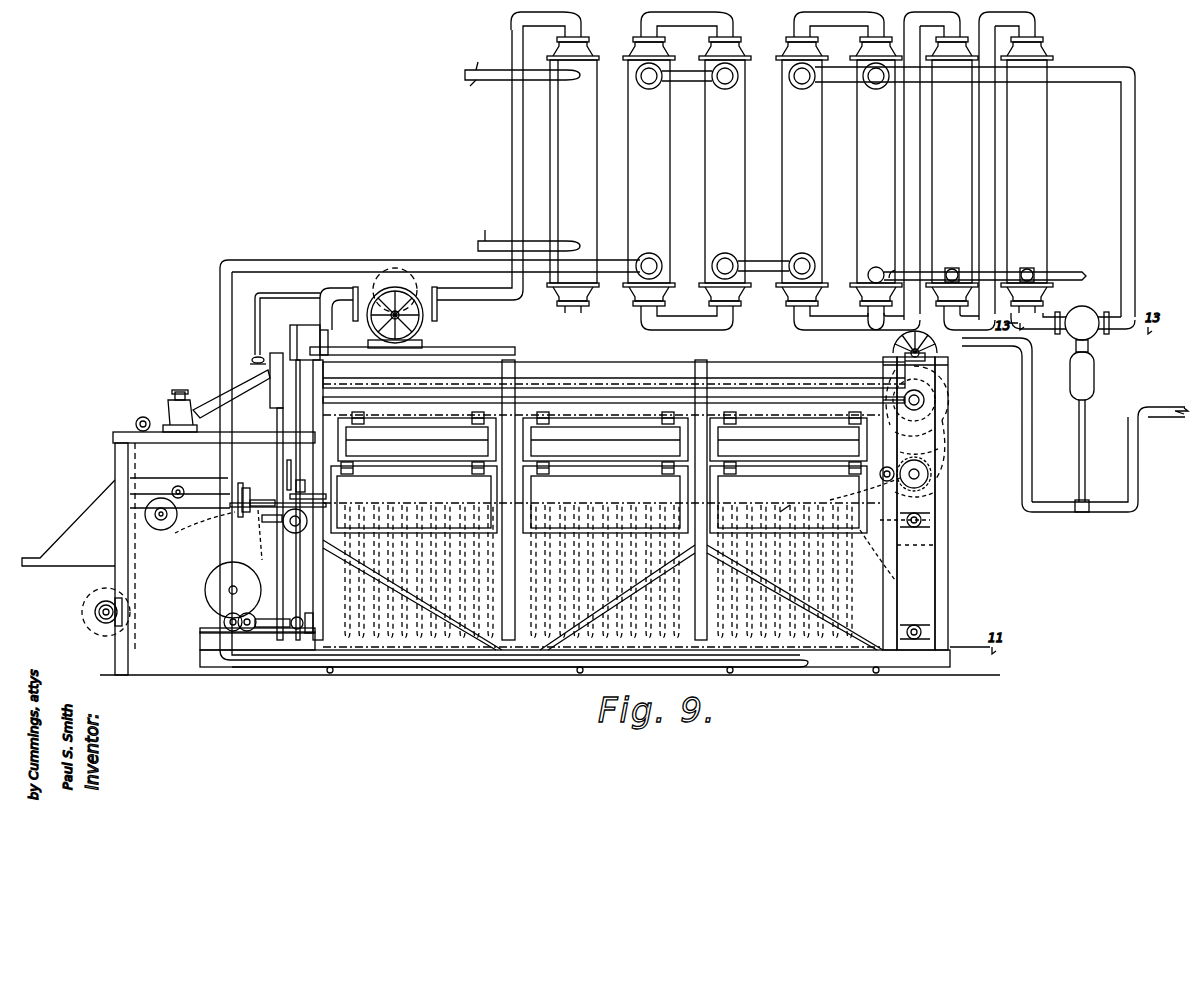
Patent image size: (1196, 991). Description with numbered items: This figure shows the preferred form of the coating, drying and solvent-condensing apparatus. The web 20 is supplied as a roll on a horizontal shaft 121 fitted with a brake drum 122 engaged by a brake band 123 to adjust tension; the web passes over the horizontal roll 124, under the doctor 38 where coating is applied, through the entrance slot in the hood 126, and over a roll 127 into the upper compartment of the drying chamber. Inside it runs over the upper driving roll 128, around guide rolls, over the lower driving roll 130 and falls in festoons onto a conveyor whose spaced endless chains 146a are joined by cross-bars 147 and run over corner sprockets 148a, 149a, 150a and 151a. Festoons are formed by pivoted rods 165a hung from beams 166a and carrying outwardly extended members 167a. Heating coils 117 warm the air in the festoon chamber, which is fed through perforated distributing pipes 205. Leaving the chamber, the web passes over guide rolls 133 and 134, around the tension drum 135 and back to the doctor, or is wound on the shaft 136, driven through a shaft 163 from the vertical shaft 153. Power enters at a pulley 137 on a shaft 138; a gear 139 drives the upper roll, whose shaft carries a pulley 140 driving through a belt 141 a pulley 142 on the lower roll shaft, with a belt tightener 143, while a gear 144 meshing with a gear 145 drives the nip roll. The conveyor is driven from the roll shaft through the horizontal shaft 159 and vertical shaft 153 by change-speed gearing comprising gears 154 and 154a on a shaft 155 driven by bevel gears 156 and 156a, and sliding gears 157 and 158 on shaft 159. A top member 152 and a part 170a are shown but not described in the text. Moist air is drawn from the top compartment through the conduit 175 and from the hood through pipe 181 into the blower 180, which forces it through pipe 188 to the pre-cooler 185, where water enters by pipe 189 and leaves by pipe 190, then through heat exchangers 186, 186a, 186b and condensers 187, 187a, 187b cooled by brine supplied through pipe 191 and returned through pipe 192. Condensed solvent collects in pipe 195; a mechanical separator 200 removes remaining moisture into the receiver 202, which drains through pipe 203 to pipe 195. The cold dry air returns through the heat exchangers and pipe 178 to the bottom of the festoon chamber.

The pre-cooler 185 is at (567, 165).
The heat exchanger 186 is at (649, 171).
The heat exchanger 186a is at (725, 171).
The heat exchanger 186b is at (802, 171).
The condenser 187 is at (876, 171).
The condenser 187a is at (952, 171).
The condenser 187b is at (1026, 216).
The pipe 188 is at (488, 300).
The pipe 189 is at (516, 232).
The pipe 190 is at (515, 84).
The pipe 191 is at (1050, 272).
The pipe 192 is at (1068, 66).
The pipe 178 is at (298, 258).
The blower or compressor 180 is at (388, 275).
The conduit 175 is at (302, 320).
The pipe 181 is at (259, 328).
The mechanical separator 200 is at (1084, 312).
The receiver 202 is at (1094, 378).
The pipe 203 is at (1079, 450).
The pipe 195 is at (1098, 528).
The top rail 152 is at (745, 398).
The belt tightener 143 is at (868, 432).
The cross-bars 147 is at (466, 512).
The endless chain 146a is at (608, 512).
The outwardly extended member 167a is at (765, 512).
The beam 166a is at (793, 497).
The gear 145 is at (860, 484).
The guide 170a is at (905, 505).
The rod 165a is at (894, 555).
The perforated distributing pipes 205 is at (445, 660).
The heating coils 117 is at (328, 674).
The pulley 137 is at (893, 345).
The shaft 138 is at (905, 357).
The upper driving roll 128 is at (938, 396).
The gear 139 is at (935, 372).
The pulley 140 is at (930, 420).
The belt 141 is at (935, 440).
The lower driving roll 130 is at (938, 478).
The gear 144 is at (935, 468).
The pulley 142 is at (935, 492).
The sprocket 149a is at (935, 522).
The sprocket 148a is at (930, 630).
The horizontal roll 124 is at (138, 424).
The doctor 38 is at (170, 408).
The hood 126 is at (232, 395).
The roll 127 is at (262, 396).
The web 20 is at (85, 625).
The horizontal shaft 121 is at (96, 612).
The brake drum 122 is at (100, 615).
The brake band 123 is at (112, 600).
The tension drum 135 is at (155, 530).
The guide roll 134 is at (177, 486).
The shaft 159 is at (235, 502).
The gear 158 is at (235, 520).
The shaft 136 is at (229, 592).
The guide roll 133 is at (250, 490).
The gear 154 is at (255, 480).
The gear 154a is at (252, 498).
The vertical shaft 153 is at (318, 461).
The shaft 155 is at (293, 481).
The bevel gear 156 is at (318, 494).
The bevel gear 156a is at (318, 505).
The gear 157 is at (266, 524).
The sprocket 150a is at (297, 533).
The shaft 163 is at (288, 619).
The sprocket 151a is at (295, 645).